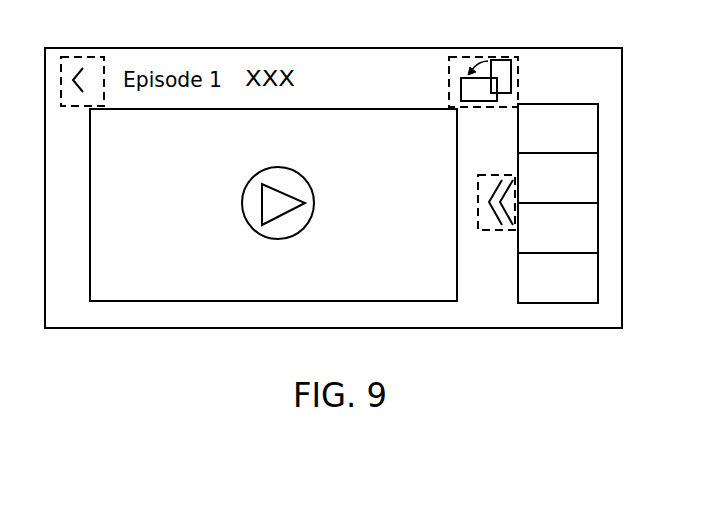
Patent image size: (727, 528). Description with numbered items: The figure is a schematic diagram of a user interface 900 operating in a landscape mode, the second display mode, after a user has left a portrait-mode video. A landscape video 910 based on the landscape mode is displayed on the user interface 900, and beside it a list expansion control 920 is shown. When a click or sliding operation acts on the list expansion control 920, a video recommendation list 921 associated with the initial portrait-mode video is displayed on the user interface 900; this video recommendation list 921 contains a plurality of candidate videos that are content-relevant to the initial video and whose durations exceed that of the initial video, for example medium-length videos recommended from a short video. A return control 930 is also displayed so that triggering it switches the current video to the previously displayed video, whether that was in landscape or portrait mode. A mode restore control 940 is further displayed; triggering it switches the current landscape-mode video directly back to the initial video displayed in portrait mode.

The user interface 900 is at (547, 48).
The landscape video 910 is at (342, 110).
The list expansion control 920 is at (498, 173).
The video recommendation list 921 is at (547, 117).
The return control 930 is at (79, 57).
The mode restore control 940 is at (473, 55).